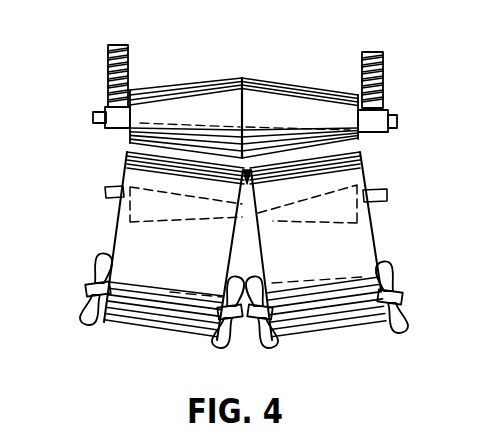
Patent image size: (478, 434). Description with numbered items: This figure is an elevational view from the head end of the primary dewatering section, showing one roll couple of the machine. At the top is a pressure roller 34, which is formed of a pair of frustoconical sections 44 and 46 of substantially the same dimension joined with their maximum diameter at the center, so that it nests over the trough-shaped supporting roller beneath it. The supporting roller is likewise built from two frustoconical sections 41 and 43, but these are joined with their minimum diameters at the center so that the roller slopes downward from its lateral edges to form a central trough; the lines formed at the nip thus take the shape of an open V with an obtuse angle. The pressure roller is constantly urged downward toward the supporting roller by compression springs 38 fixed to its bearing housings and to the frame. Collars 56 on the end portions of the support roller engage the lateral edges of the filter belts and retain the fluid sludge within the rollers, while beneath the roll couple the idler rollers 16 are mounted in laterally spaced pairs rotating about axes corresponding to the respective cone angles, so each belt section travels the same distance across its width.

The compression spring 38 is at (110, 72).
The pressure roller 34 is at (244, 102).
The frustoconical section 44 is at (186, 118).
The frustoconical section 46 is at (287, 64).
The frustoconical section 41 is at (197, 207).
The frustoconical section 43 is at (284, 206).
The collar 56 is at (388, 268).
The idler roller 16 is at (163, 307).